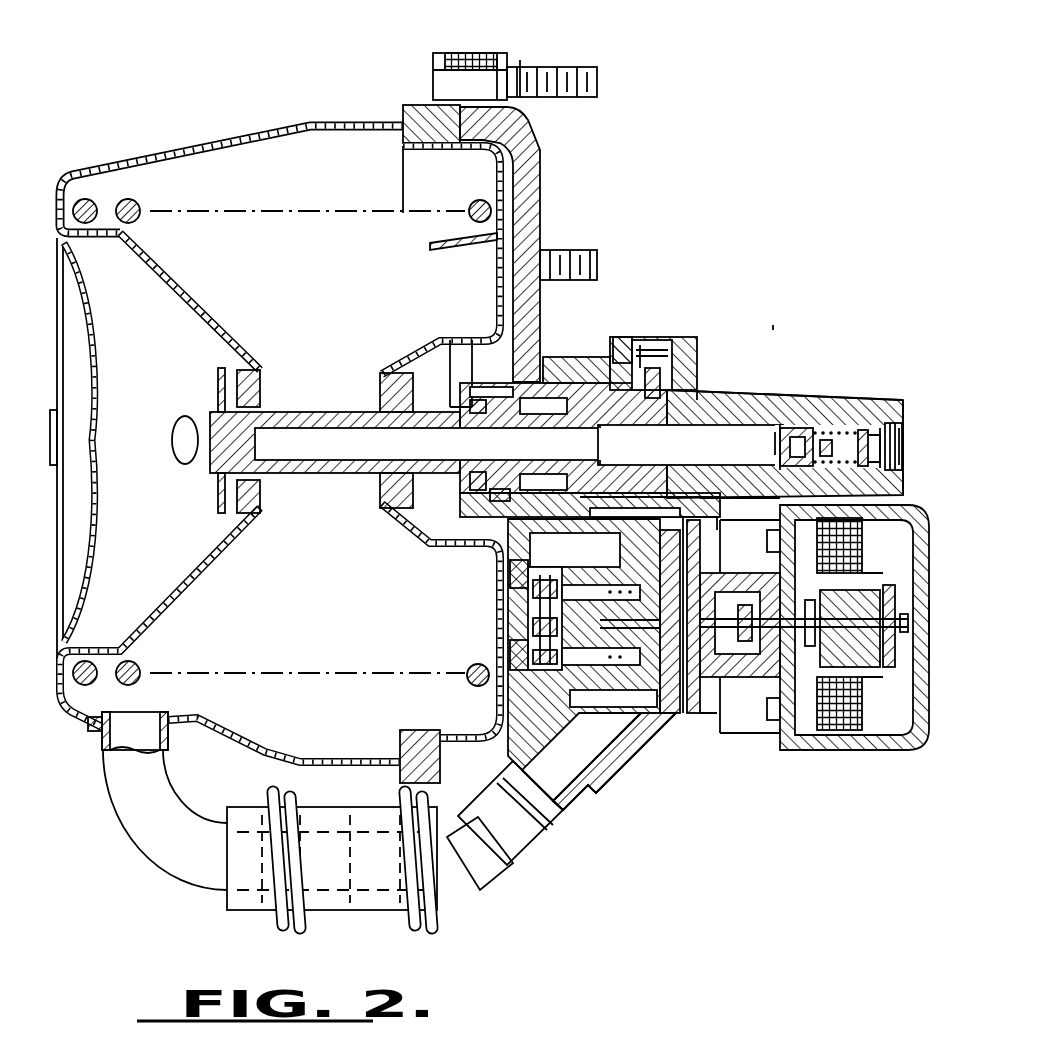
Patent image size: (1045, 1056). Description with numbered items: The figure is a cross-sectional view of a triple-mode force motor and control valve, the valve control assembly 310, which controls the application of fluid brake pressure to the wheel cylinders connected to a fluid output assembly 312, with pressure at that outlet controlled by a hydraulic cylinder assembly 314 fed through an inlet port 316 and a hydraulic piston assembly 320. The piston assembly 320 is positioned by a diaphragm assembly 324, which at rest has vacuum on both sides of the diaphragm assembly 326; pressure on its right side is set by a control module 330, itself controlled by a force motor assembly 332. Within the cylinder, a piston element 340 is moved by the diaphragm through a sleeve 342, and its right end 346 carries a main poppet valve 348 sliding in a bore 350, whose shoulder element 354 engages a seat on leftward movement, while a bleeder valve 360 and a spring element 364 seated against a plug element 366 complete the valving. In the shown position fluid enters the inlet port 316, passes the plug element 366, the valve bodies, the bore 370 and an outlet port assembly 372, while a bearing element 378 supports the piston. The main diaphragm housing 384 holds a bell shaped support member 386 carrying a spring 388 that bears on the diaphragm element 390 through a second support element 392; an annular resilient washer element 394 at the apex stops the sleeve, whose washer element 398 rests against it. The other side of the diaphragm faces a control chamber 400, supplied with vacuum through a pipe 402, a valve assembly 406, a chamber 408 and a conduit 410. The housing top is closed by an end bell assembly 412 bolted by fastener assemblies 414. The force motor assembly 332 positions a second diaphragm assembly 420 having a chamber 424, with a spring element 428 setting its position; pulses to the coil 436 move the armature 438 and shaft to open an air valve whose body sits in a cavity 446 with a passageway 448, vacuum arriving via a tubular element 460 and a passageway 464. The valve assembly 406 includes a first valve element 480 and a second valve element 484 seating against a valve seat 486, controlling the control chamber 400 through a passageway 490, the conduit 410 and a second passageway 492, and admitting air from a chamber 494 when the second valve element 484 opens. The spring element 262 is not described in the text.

The spring 262 is at (832, 436).
The valve control assembly 310 is at (740, 238).
The fluid output assembly 312 is at (822, 358).
The hydraulic cylinder assembly 314 is at (776, 320).
The inlet port 316 is at (907, 477).
The hydraulic piston assembly 320 is at (717, 427).
The diaphragm assembly 324 is at (248, 116).
The diaphragm assembly 326 is at (534, 187).
The control module 330 is at (701, 740).
The force motor assembly 332 is at (866, 760).
The piston element 340 is at (638, 343).
The sleeve 342 is at (298, 417).
The right end of the piston 346 is at (703, 392).
The main poppet valve 348 is at (795, 428).
The bore 350 is at (824, 430).
The shoulder element 354 is at (786, 427).
The bleeder valve 360 is at (862, 427).
The spring element 364 is at (874, 434).
The plug element 366 is at (884, 440).
The bore 370 is at (690, 424).
The outlet port assembly 372 is at (637, 330).
The bearing element 378 is at (624, 348).
The main diaphragm housing 384 is at (312, 124).
The bell shaped support member 386 is at (176, 280).
The spring 388 is at (89, 186).
The diaphragm element 390 is at (510, 157).
The second support element 392 is at (404, 157).
The annular resilient washer element 394 is at (262, 368).
The washer element 398 is at (219, 372).
The control chamber 400 is at (466, 545).
The pipe 402 is at (512, 847).
The valve assembly 406 is at (568, 823).
The chamber 408 is at (530, 616).
The conduit 410 is at (510, 560).
The end bell assembly 412 is at (540, 220).
The fastener assemblies 414 is at (480, 56).
The second diaphragm assembly 420 is at (735, 483).
The chamber 424 is at (630, 706).
The spring element 428 is at (607, 693).
The coil 436 is at (896, 750).
The armature 438 is at (887, 587).
The cavity 446 is at (780, 680).
The passageway 448 is at (757, 592).
The tubular element 460 is at (680, 497).
The passageway 464 is at (713, 690).
The first valve element 480 is at (618, 540).
The second valve element 484 is at (549, 533).
The valve seat 486 is at (533, 687).
The passageway 490 is at (538, 538).
The second passageway 492 is at (508, 568).
The chamber 494 is at (533, 656).